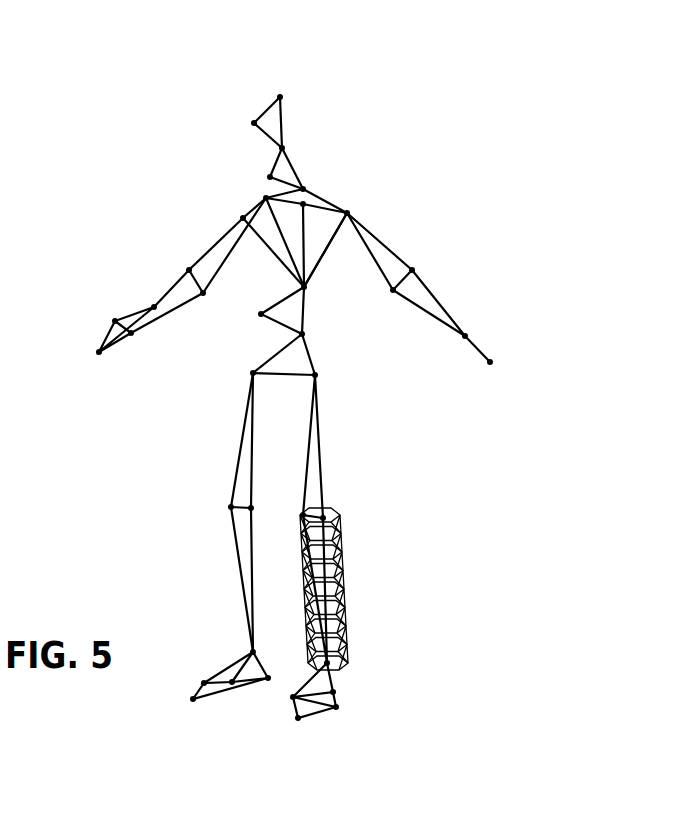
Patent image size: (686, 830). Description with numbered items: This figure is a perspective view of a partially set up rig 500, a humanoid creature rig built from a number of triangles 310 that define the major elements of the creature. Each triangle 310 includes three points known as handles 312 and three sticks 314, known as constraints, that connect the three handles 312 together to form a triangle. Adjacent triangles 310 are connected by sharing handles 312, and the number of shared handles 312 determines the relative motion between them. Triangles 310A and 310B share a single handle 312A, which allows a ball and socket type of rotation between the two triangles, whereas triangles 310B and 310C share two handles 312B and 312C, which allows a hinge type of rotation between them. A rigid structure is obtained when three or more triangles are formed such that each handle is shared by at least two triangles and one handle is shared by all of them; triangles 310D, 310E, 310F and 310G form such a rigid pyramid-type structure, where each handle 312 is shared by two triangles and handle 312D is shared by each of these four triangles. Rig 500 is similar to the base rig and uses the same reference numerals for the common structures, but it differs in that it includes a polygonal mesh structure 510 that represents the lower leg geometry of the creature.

The partially set up rig 500 is at (408, 30).
The triangle 310 is at (287, 170).
The triangle 310A is at (285, 353).
The triangle 310B is at (240, 470).
The triangle 310C is at (243, 548).
The triangle 310D is at (317, 221).
The triangle 310E is at (320, 203).
The triangle 310F is at (287, 195).
The triangle 310G is at (287, 220).
The handle 312 is at (293, 140).
The handle 312A is at (240, 374).
The handle 312B is at (218, 507).
The handle 312C is at (245, 515).
The handle 312D is at (328, 237).
The stick 314 is at (440, 303).
The polygonal mesh structure 510 is at (340, 563).